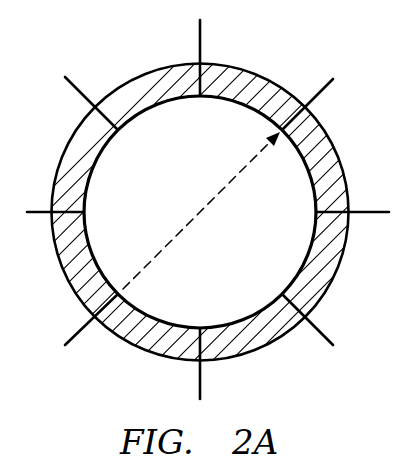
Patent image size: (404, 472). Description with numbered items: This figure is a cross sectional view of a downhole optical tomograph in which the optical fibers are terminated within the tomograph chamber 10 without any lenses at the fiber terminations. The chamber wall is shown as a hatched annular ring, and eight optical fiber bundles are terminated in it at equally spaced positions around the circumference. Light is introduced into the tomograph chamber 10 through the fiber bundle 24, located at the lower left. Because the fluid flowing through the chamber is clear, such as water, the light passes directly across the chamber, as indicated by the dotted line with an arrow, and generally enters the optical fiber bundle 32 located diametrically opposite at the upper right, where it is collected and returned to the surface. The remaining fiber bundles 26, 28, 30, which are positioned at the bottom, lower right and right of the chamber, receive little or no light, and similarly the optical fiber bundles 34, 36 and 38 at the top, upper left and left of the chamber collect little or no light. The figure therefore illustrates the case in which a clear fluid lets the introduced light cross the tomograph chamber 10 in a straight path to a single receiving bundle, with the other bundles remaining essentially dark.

The tomograph chamber 10 is at (68, 254).
The fiber bundle 24 is at (78, 332).
The fiber bundle 26 is at (198, 384).
The fiber bundle 28 is at (318, 330).
The fiber bundle 30 is at (370, 214).
The optical fiber bundle 32 is at (314, 95).
The optical fiber bundle 34 is at (202, 40).
The optical fiber bundle 36 is at (80, 92).
The optical fiber bundle 38 is at (30, 209).